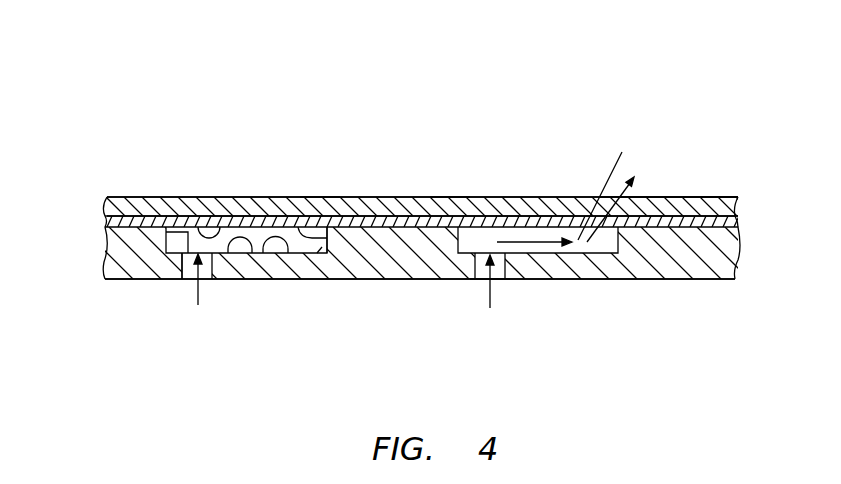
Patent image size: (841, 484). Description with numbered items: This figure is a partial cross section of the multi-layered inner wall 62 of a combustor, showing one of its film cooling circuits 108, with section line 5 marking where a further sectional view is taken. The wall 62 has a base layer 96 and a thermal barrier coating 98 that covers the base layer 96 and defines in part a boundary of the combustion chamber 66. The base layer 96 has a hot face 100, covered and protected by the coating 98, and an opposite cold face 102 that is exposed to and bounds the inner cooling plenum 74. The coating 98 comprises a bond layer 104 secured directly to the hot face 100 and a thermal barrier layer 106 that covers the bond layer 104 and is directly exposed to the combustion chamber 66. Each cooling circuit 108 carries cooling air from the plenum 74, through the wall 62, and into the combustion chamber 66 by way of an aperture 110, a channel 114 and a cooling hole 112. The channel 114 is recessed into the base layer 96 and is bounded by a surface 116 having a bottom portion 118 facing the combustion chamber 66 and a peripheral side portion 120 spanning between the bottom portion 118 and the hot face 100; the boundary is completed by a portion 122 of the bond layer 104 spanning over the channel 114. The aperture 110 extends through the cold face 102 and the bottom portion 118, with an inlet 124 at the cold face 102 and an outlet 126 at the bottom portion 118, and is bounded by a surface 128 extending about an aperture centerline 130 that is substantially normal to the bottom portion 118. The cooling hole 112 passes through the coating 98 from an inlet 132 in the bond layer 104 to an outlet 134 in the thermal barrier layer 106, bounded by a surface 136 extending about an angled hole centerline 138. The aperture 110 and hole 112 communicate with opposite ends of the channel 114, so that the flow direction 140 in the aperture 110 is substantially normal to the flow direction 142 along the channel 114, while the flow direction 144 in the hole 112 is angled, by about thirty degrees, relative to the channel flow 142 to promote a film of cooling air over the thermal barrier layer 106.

The section line 5 is at (468, 160).
The inner wall 62 is at (733, 96).
The combustion chamber 66 is at (518, 143).
The inner cooling plenum 74 is at (538, 350).
The base layer 96 is at (703, 258).
The thermal barrier coating 98 is at (95, 193).
The hot face 100 is at (738, 217).
The cold face 102 is at (632, 280).
The bond layer 104 is at (105, 197).
The thermal barrier layer 106 is at (152, 197).
The cooling circuit 108 is at (306, 168).
The aperture 110 is at (210, 279).
The cooling hole 112 is at (313, 207).
The channel 114 is at (165, 232).
The surface 116 is at (250, 255).
The bottom portion 118 is at (288, 255).
The side portion 120 is at (318, 255).
The portion of bond layer 122 is at (228, 240).
The inlet 124 is at (186, 279).
The outlet 126 is at (200, 230).
The surface 128 is at (480, 270).
The aperture centerline 130 is at (490, 297).
The inlet 132 is at (313, 252).
The outlet 134 is at (318, 197).
The surface 136 is at (603, 207).
The hole centerline 138 is at (621, 153).
The direction of flow arrow 140 is at (198, 305).
The direction of flow arrow 142 is at (522, 216).
The direction of flow arrow 144 is at (620, 197).